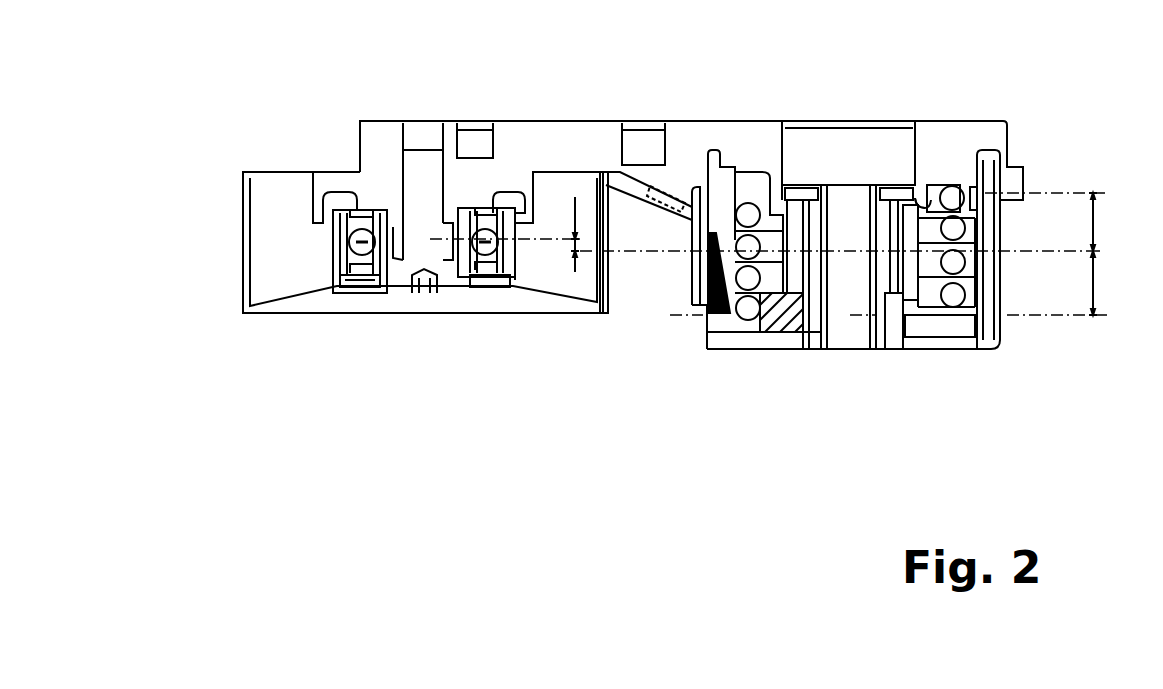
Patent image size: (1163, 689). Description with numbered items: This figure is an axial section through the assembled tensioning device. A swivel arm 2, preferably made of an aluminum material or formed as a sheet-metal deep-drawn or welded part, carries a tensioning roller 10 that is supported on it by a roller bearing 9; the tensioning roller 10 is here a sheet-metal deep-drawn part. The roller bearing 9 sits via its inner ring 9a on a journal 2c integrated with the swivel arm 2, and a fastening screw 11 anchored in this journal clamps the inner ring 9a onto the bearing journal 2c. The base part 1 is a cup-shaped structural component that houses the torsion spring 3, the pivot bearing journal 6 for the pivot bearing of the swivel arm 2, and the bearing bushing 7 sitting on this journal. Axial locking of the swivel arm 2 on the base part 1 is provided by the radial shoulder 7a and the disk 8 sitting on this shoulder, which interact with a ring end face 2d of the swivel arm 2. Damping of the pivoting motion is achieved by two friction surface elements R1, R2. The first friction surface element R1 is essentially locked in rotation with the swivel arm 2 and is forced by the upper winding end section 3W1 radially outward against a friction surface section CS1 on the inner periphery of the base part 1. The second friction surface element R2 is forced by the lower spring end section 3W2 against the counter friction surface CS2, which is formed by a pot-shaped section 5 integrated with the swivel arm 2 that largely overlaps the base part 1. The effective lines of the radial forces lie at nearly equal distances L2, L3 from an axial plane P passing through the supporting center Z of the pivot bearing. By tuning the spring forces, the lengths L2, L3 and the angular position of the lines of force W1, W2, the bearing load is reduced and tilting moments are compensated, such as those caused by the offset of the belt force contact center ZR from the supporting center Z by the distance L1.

The base part 1 is at (993, 297).
The swivel arm 2 is at (557, 137).
The journal 2c is at (447, 273).
The ring end face 2d is at (930, 137).
The torsion spring 3 is at (960, 263).
The upper winding end section 3W1 is at (950, 195).
The lower spring end section 3W2 is at (772, 303).
The pot-shaped section 5 is at (700, 238).
The pivot bearing journal 6 is at (820, 277).
The bearing bushing 7 is at (848, 250).
The radial shoulder 7a is at (793, 217).
The disk 8 is at (800, 188).
The roller bearing 9 is at (385, 192).
The inner ring 9a is at (402, 282).
The tensioning roller 10 is at (243, 275).
The fastening screw 11 is at (397, 283).
The friction surface section CS1 is at (978, 200).
The counter friction surface CS2 is at (700, 330).
The distance L1 is at (563, 234).
The distance L2 is at (1111, 283).
The distance L3 is at (1111, 222).
The axial plane P is at (1103, 252).
The first friction surface element R1 is at (970, 137).
The second friction surface element R2 is at (737, 337).
The effective line of force W1 is at (1052, 193).
The effective line of force W2 is at (1063, 318).
The supporting center Z is at (860, 350).
The belt force contact center ZR is at (420, 234).